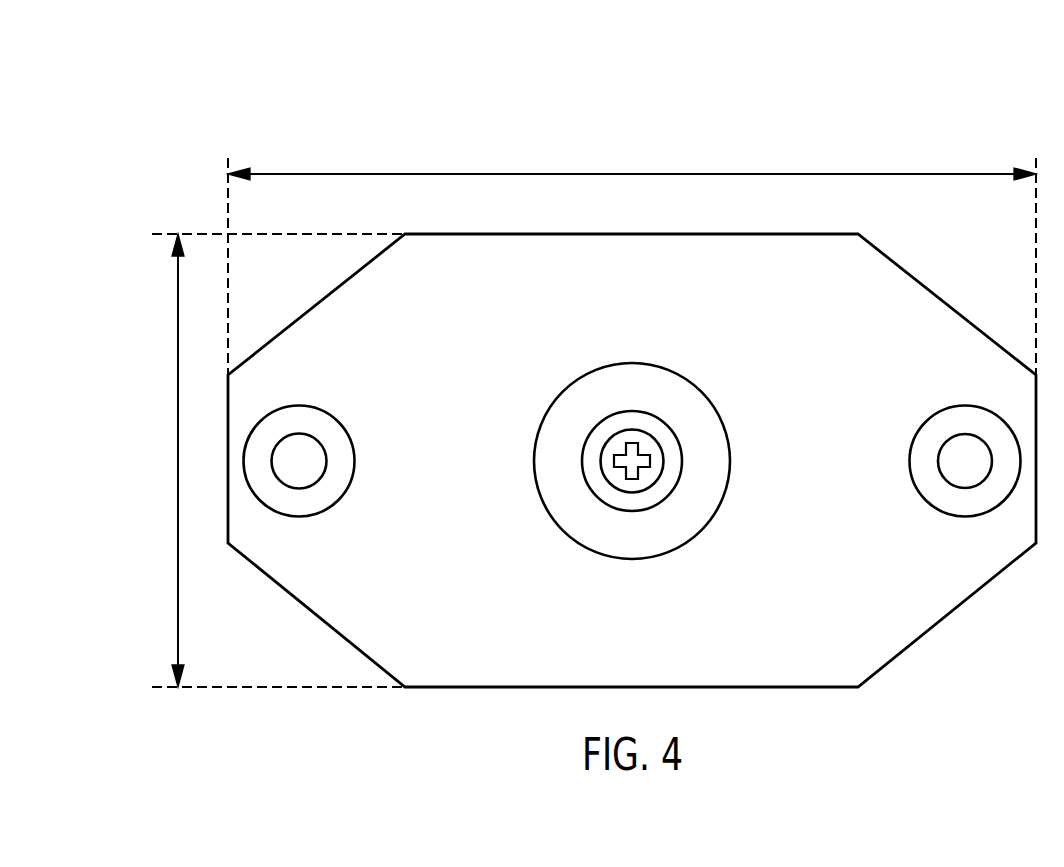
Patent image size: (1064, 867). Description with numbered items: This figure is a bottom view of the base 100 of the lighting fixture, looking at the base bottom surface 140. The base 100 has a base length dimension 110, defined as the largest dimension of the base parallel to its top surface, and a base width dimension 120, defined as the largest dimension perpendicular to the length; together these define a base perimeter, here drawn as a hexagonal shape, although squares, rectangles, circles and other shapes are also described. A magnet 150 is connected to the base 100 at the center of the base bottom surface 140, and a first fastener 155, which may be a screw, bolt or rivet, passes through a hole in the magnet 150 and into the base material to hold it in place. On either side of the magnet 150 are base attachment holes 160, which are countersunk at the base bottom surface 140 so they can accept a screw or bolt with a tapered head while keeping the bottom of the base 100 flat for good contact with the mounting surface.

The base 100 is at (157, 122).
The base length dimension 110 is at (604, 173).
The base width dimension 120 is at (177, 450).
The base bottom surface 140 is at (900, 605).
The magnet 150 is at (579, 401).
The first fastener 155 is at (647, 448).
The base attachment hole 160 is at (305, 457).